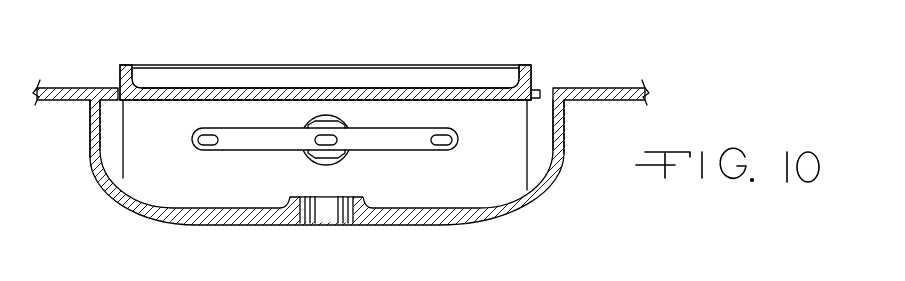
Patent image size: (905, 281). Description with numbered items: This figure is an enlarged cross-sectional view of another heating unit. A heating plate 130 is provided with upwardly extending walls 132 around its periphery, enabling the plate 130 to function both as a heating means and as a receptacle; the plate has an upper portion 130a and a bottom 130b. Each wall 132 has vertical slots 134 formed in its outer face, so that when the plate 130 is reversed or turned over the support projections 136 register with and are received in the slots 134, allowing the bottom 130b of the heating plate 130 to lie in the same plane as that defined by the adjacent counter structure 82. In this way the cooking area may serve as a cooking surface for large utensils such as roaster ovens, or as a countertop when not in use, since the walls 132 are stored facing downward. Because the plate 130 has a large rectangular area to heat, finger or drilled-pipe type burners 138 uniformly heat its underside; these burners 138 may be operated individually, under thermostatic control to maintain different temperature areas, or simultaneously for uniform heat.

The housing 82 is at (604, 88).
The heating plate 130 is at (292, 87).
The plate top surface 130a is at (365, 87).
The bottom of the heating plate 130b is at (440, 100).
The upwardly extending walls 132 is at (140, 72).
The vertical slots 134 is at (118, 78).
The support projections 136 is at (112, 130).
The burners 138 is at (388, 155).